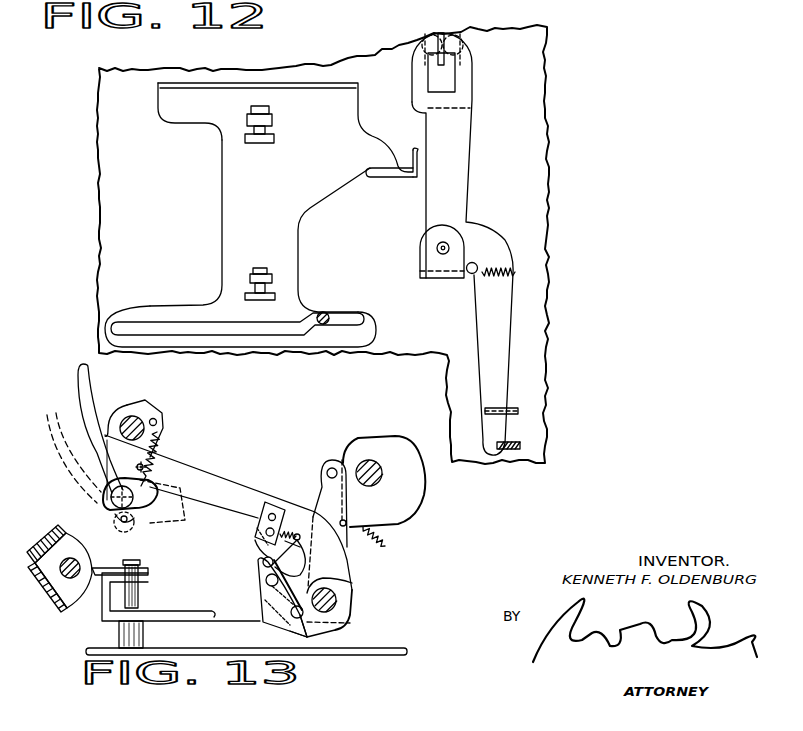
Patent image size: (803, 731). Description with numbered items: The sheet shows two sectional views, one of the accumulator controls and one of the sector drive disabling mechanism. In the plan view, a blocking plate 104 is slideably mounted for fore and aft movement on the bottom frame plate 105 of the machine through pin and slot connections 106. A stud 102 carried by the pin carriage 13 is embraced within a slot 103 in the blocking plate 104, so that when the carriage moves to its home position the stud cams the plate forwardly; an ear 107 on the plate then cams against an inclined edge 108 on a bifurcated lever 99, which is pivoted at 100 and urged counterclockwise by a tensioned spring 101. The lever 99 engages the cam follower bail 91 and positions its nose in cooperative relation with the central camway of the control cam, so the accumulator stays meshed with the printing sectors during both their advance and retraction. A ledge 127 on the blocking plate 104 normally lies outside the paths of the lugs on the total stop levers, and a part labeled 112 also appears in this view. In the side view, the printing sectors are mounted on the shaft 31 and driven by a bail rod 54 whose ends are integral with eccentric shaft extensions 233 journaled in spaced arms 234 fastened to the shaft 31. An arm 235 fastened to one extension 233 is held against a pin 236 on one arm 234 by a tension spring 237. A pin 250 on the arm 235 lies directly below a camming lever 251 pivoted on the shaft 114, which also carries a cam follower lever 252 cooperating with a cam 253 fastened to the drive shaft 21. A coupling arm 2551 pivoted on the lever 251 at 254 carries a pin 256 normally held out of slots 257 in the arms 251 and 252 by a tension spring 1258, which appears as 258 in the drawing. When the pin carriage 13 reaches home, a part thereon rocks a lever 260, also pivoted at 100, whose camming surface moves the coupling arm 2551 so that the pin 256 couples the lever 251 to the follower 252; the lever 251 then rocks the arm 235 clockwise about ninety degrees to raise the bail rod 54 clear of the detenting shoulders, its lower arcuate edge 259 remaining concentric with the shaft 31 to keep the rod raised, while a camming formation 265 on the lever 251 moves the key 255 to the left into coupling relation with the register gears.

In FIG. 12, the bottom frame plate 105 is at (102, 203).
In FIG. 12, the ledge 127 is at (286, 86).
In FIG. 12, the blocking plate 104 is at (222, 250).
In FIG. 12, the slot 103 is at (240, 319).
In FIG. 12, the stud 102 is at (326, 316).
In FIG. 12, the pin and slot connections 106 is at (272, 112).
In FIG. 12, the inclined edge 108 is at (419, 149).
In FIG. 12, the ear 107 is at (411, 178).
In FIG. 12, the bifurcated lever 99 is at (462, 173).
In FIG. 13, the bifurcated lever 99 is at (170, 612).
In FIG. 12, the cam follower bail 91 is at (449, 30).
In FIG. 12, the pivot 100 is at (448, 245).
In FIG. 13, the pivot 100 is at (140, 592).
In FIG. 12, the tensioned spring 101 is at (516, 272).
In FIG. 12, the end bracket plates 112 is at (517, 441).
In FIG. 13, the lower arcuate edge 259 is at (80, 416).
In FIG. 13, the spaced arms 234 is at (117, 410).
In FIG. 13, the shaft 31 is at (150, 410).
In FIG. 13, the tension spring 237 is at (172, 430).
In FIG. 13, the pin 236 is at (148, 465).
In FIG. 13, the pin 250 is at (188, 474).
In FIG. 13, the camming lever 251 is at (240, 515).
In FIG. 13, the eccentric shaft extensions 233 is at (97, 510).
In FIG. 13, the bail rod 54 is at (107, 523).
In FIG. 13, the arm 235 is at (148, 520).
In FIG. 13, the hook 258 is at (264, 556).
In FIG. 13, the tension spring 1258 is at (259, 554).
In FIG. 13, the camming formation 265 is at (268, 504).
In FIG. 13, the cam follower lever 252 is at (352, 550).
In FIG. 13, the cam 253 is at (403, 515).
In FIG. 13, the drive shaft 21 is at (367, 461).
In FIG. 13, the pin 256 is at (349, 585).
In FIG. 13, the shaft 114 is at (336, 605).
In FIG. 13, the slots 257 is at (351, 623).
In FIG. 13, the pivot 254 is at (262, 580).
In FIG. 13, the key 255 is at (309, 639).
In FIG. 13, the coupling arm 2551 is at (323, 633).
In FIG. 13, the pin carriage 13 is at (23, 580).
In FIG. 13, the lever 260 is at (191, 614).